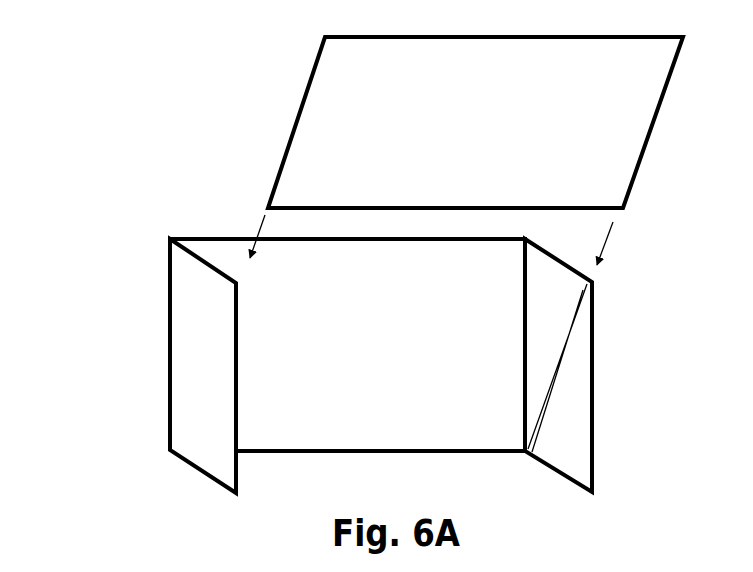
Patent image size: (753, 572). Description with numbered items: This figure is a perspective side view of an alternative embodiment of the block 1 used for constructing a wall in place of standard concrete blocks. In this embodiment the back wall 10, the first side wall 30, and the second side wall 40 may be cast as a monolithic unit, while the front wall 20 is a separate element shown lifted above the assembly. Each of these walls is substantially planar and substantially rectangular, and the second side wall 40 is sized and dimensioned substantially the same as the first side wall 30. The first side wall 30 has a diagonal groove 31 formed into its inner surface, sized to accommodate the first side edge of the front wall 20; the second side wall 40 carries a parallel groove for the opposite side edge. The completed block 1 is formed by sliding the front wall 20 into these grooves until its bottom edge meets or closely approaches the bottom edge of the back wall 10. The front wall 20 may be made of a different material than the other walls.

The block 1 is at (116, 206).
The back wall 10 is at (193, 236).
The front wall 20 is at (655, 128).
The first side wall 30 is at (593, 380).
The diagonal groove 31 is at (592, 335).
The second side wall 40 is at (167, 335).